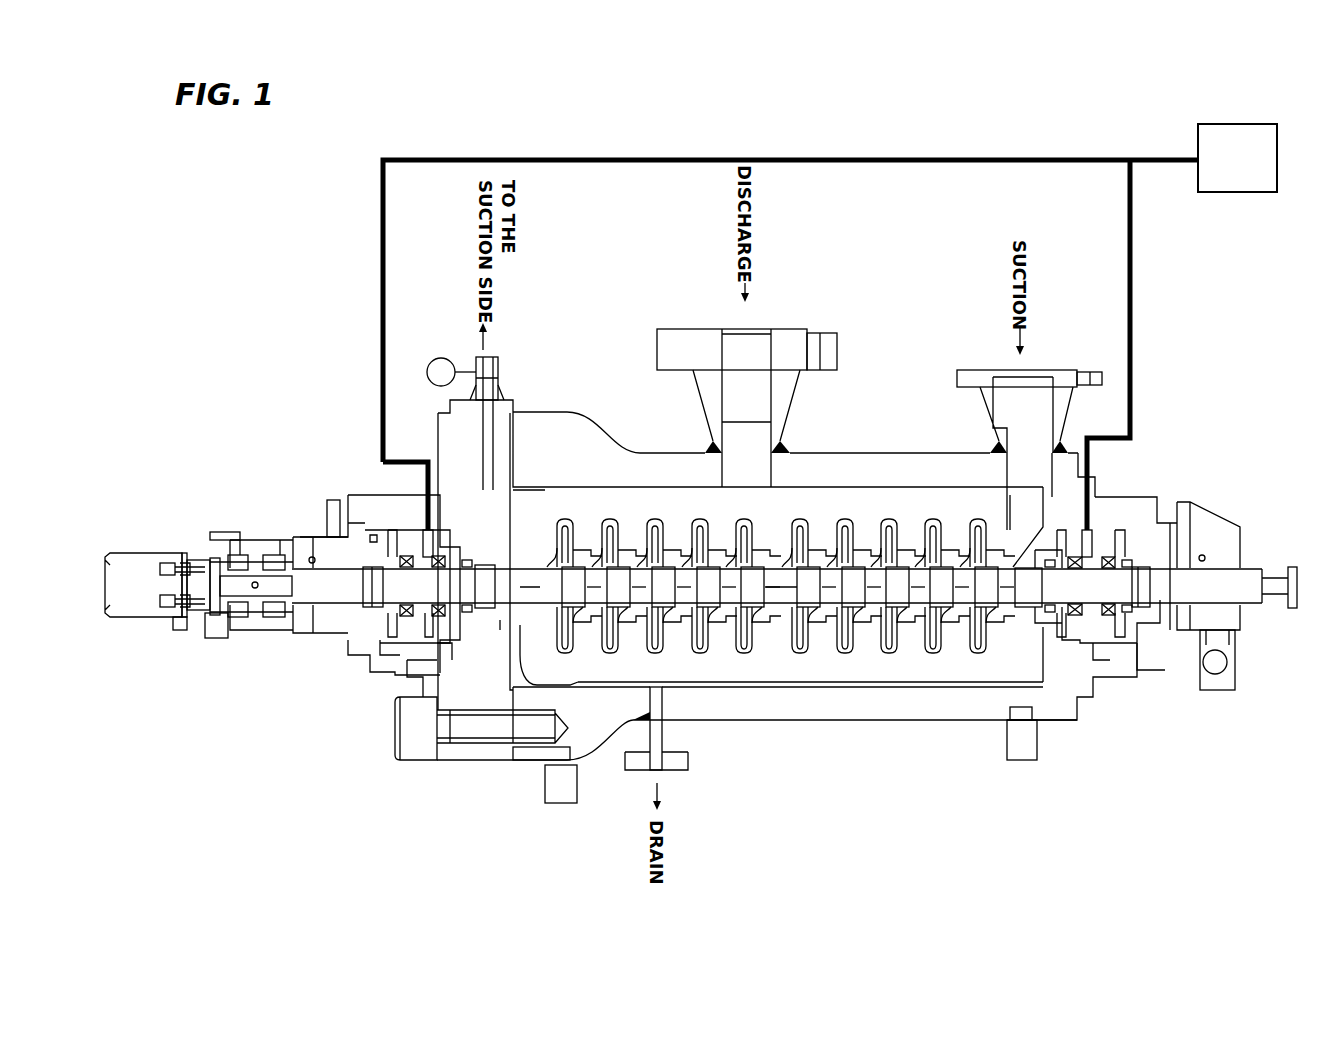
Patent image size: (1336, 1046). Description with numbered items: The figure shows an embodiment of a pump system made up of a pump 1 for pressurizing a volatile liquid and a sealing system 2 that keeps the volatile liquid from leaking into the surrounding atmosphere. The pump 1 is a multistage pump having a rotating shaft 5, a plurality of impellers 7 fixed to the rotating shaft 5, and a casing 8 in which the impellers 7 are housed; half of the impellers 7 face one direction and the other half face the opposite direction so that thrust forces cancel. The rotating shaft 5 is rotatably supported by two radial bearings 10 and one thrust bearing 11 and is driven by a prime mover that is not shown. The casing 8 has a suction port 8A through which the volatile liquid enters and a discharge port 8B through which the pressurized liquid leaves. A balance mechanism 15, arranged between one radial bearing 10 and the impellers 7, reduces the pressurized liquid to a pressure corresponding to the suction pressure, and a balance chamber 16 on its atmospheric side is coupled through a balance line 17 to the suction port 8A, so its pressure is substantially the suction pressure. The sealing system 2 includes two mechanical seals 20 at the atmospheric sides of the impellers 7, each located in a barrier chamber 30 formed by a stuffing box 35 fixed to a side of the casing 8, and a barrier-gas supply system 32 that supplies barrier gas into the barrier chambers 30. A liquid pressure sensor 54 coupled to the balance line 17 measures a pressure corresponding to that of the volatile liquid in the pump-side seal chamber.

The pump 1 is at (968, 752).
The sealing system 2 is at (1180, 408).
The rotating shaft 5 is at (770, 597).
The impellers 7 is at (978, 518).
The casing 8 is at (885, 722).
The suction port 8A is at (1048, 368).
The discharge port 8B is at (730, 325).
The radial bearings 10 is at (303, 550).
The thrust bearing 11 is at (265, 553).
The balance mechanism 15 is at (500, 620).
The balance chamber 16 is at (482, 630).
The balance line 17 is at (475, 435).
The mechanical seals 20 is at (402, 612).
The barrier chambers 30 is at (421, 553).
The barrier-gas supply system 32 is at (915, 135).
The stuffing boxes 35 is at (350, 498).
The liquid pressure sensor 54 is at (441, 358).